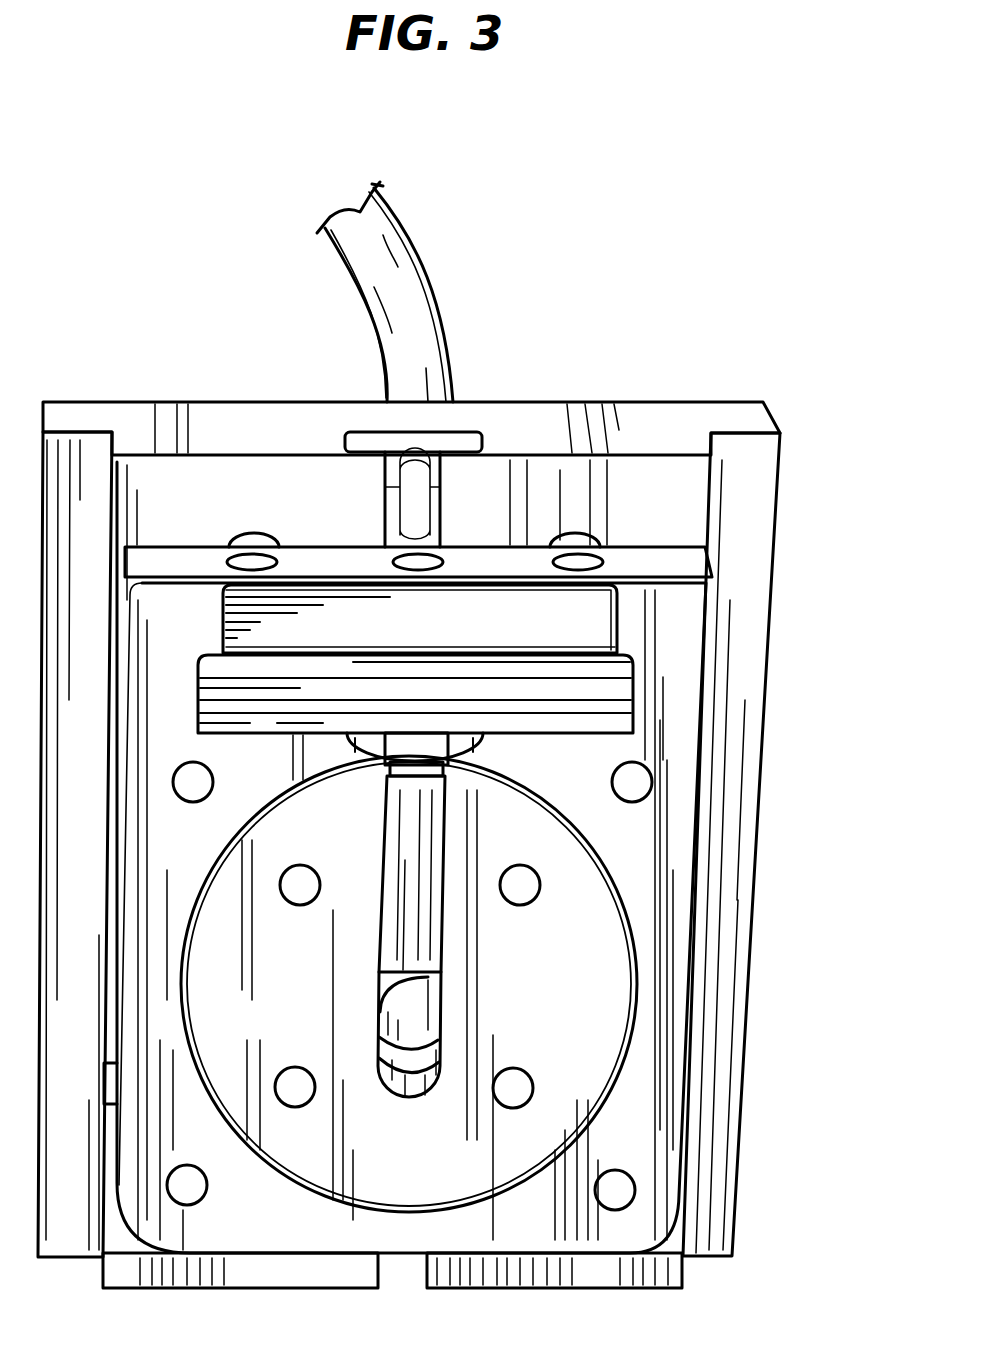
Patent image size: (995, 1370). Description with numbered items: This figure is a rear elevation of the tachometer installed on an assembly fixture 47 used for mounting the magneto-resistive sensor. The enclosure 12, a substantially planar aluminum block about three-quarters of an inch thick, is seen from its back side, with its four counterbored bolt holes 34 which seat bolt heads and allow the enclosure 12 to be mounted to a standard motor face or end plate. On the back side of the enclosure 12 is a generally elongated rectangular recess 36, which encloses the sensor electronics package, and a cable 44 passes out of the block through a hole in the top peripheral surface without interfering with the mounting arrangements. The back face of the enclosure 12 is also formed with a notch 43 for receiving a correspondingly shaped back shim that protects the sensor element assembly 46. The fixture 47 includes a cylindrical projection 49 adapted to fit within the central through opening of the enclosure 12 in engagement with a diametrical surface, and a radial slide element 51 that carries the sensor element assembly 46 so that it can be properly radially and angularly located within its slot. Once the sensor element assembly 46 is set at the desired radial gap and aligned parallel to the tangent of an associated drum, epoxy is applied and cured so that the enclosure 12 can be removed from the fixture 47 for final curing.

The enclosure 12 is at (187, 545).
The counterbored bolt holes 34 is at (205, 788).
The recess 36 is at (612, 640).
The notch 43 is at (478, 755).
The cable 44 is at (413, 316).
The magneto-resistive sensor element assembly 46 is at (410, 762).
The fixture 47 is at (780, 540).
The cylindrical projection 49 is at (378, 1185).
The radial slide element 51 is at (430, 932).